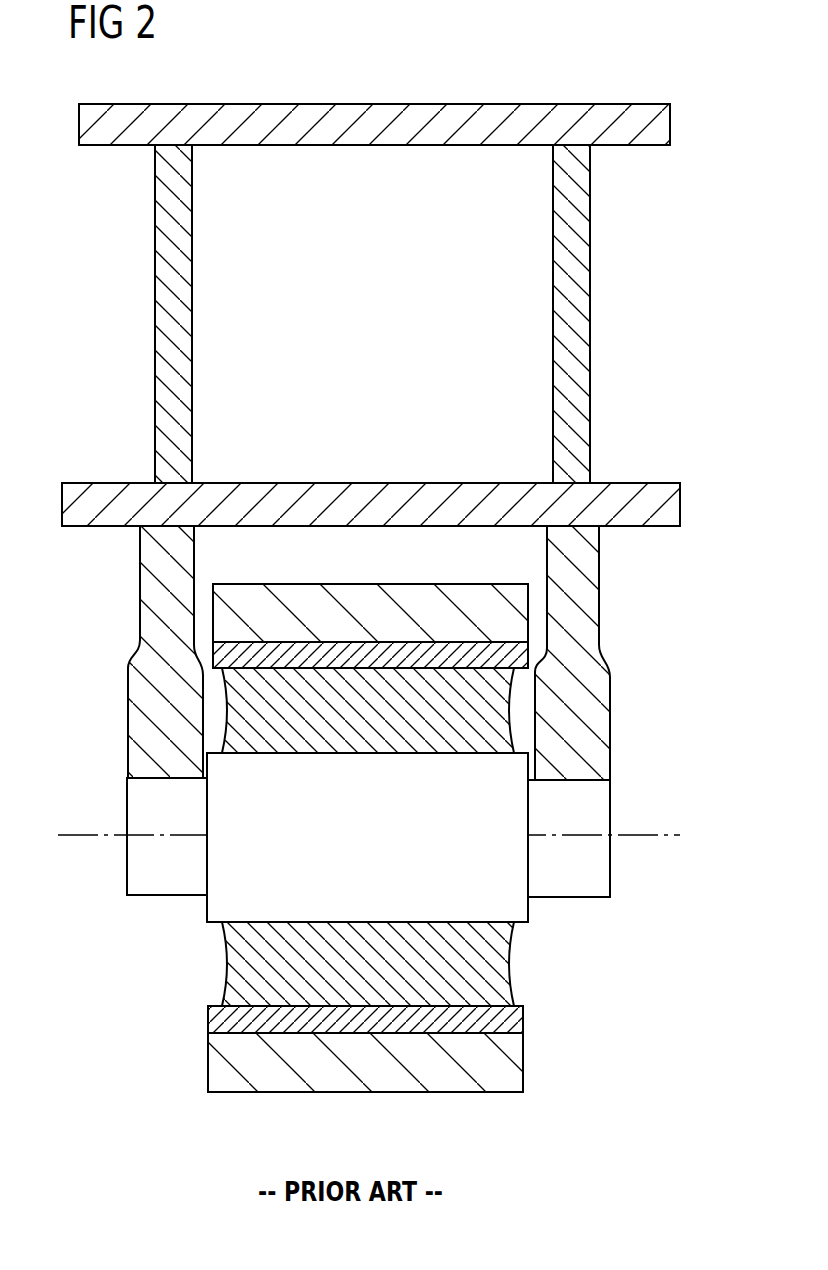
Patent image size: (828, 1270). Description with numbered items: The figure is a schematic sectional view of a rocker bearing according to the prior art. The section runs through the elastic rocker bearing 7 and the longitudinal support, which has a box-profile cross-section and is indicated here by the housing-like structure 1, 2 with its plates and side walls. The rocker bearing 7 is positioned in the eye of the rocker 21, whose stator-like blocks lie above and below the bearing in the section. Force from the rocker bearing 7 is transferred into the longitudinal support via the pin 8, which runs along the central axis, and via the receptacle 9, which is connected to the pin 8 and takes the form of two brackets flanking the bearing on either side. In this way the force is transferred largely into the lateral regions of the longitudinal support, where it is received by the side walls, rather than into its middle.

The housing 1 is at (371, 315).
The stator carrier 2 is at (580, 318).
The rocker bearing 7 is at (232, 964).
The pin 8 is at (136, 860).
The receptacle 9 is at (143, 655).
The rocker 21 is at (359, 600).